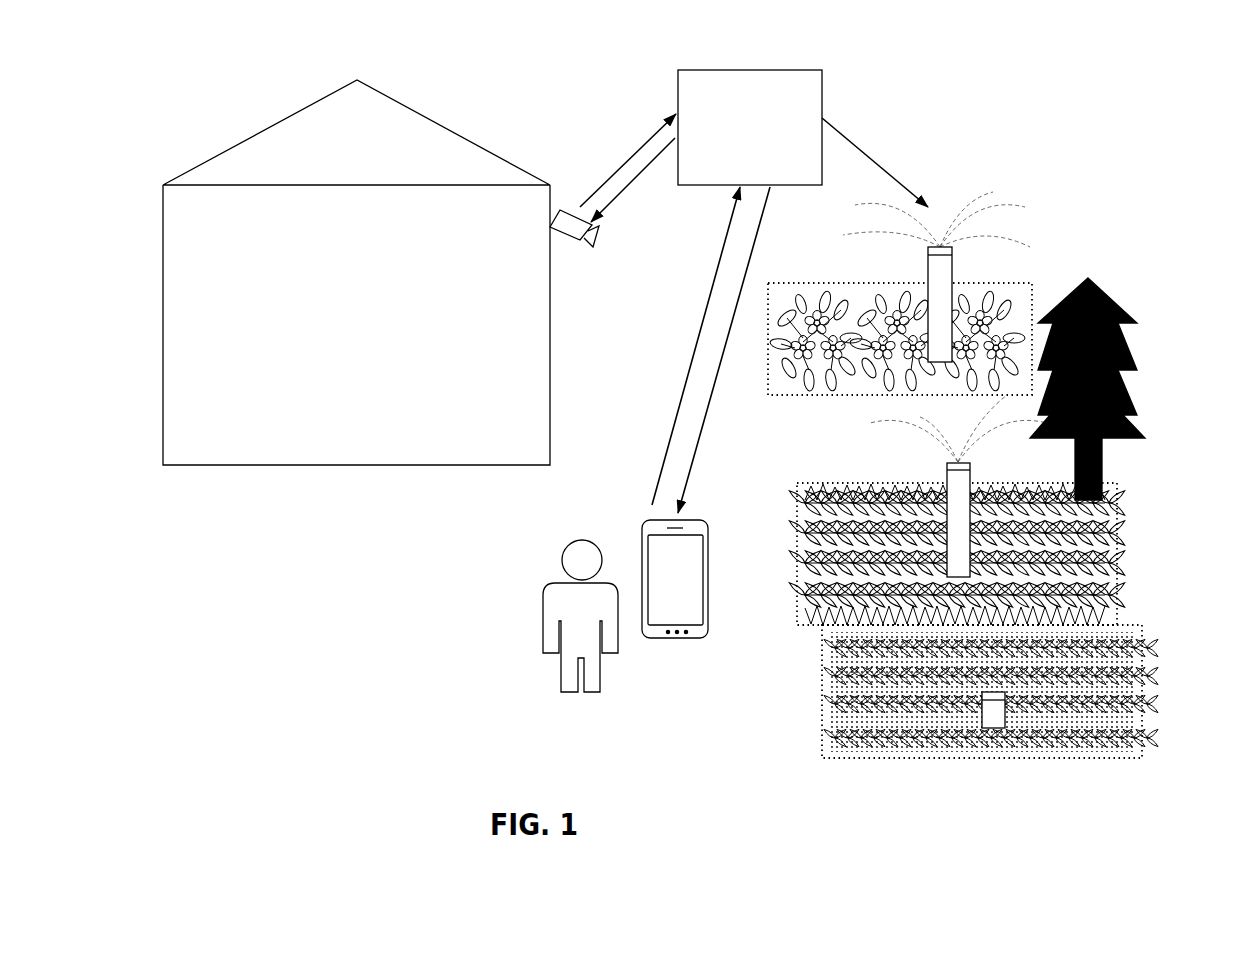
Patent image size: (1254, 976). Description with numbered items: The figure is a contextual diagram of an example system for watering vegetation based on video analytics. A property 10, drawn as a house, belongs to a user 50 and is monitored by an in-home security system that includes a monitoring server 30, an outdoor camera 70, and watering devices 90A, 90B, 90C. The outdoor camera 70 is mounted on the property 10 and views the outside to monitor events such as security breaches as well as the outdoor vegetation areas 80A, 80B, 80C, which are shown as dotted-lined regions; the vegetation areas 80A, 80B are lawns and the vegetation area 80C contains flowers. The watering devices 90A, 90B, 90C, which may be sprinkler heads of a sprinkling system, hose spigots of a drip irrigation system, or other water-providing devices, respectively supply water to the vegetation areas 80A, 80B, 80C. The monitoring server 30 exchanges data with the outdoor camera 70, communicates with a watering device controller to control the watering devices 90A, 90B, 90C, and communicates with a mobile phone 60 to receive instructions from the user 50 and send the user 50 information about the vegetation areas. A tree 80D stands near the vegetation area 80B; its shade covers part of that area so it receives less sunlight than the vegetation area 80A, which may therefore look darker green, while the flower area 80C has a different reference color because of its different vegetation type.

The property 10 is at (268, 128).
The monitoring server 30 is at (803, 65).
The user 50 is at (545, 598).
The mobile phone 60 is at (693, 578).
The outdoor camera 70 is at (567, 207).
The vegetation area 80A is at (1142, 652).
The vegetation area 80B is at (1117, 560).
The vegetation area 80C is at (843, 283).
The tree 80D is at (1132, 425).
The watering device 90A is at (995, 728).
The watering device 90B is at (962, 482).
The watering device 90C is at (942, 283).